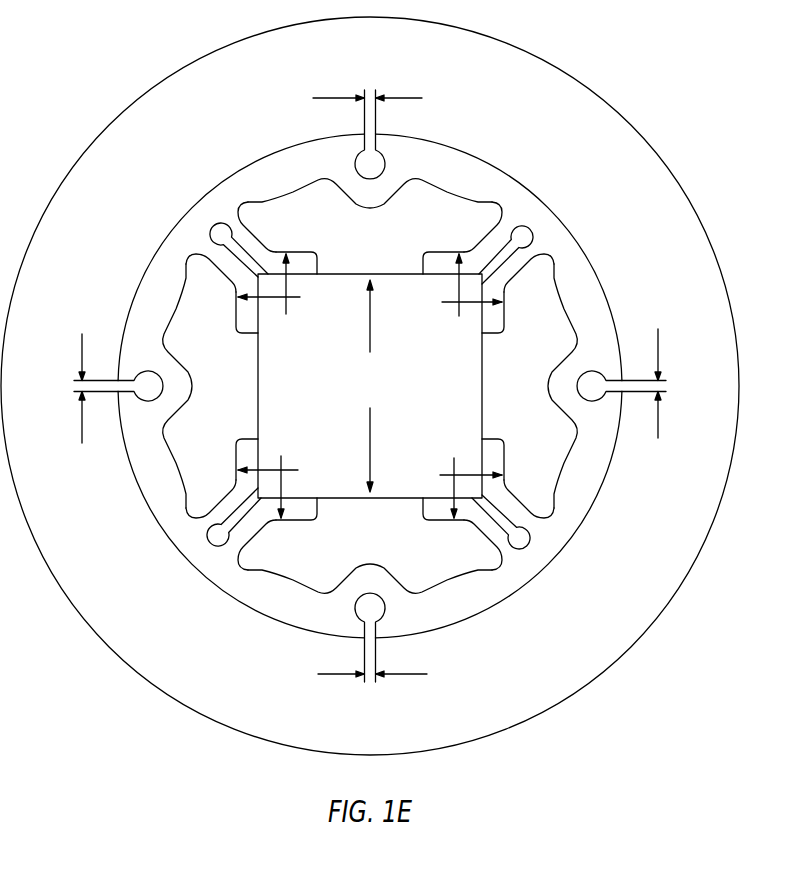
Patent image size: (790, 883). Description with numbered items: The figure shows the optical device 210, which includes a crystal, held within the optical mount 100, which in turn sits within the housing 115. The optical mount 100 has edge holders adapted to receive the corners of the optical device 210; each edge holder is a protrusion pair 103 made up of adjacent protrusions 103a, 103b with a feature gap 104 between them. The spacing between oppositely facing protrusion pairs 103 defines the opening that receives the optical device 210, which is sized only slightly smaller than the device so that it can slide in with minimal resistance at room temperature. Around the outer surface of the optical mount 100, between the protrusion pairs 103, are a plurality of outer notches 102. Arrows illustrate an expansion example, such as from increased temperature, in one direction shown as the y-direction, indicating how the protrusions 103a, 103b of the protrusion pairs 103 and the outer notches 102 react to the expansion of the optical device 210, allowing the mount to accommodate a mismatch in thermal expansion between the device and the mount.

The optical mount 100 is at (498, 608).
The outer notches 102 is at (593, 390).
The protrusion pair 103 is at (217, 291).
The protrusion 103a is at (275, 253).
The protrusion 103b is at (240, 231).
The feature gap 104 is at (243, 257).
The housing 115 is at (606, 150).
The optical device 210 is at (318, 447).